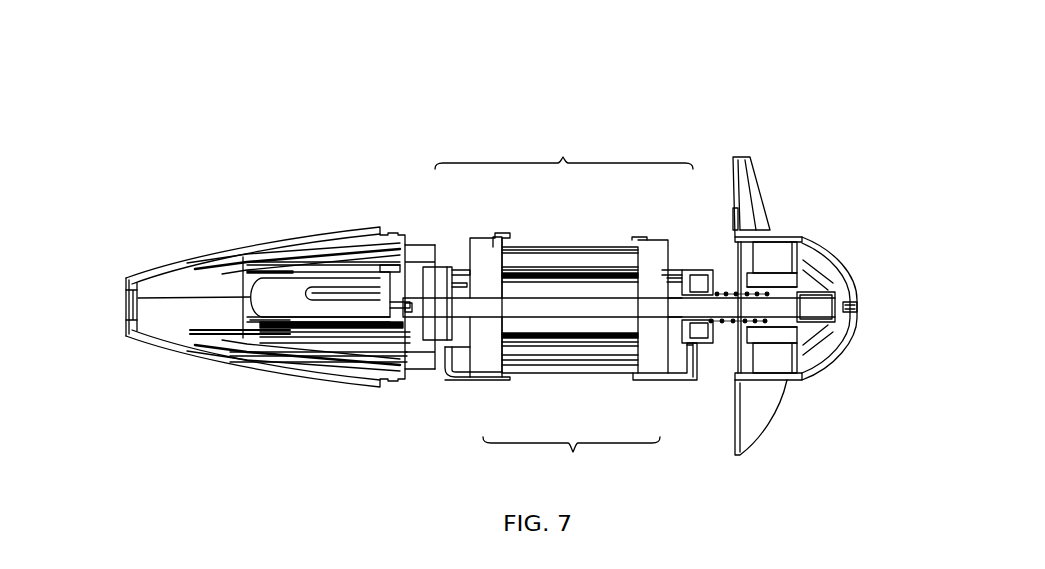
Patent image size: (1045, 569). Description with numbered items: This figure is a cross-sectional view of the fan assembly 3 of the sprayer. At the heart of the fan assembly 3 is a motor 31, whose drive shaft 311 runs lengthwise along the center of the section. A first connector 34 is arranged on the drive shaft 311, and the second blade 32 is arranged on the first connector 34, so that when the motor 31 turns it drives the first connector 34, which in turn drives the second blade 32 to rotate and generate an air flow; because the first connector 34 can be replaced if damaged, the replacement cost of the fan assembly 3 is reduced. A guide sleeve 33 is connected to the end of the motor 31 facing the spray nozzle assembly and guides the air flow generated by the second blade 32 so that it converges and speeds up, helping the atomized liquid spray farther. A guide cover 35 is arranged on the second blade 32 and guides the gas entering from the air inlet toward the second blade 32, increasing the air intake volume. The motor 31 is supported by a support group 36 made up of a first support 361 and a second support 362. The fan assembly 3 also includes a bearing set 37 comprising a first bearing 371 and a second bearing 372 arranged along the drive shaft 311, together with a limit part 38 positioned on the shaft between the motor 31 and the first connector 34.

The fan assembly 3 is at (552, 63).
The motor 31 is at (575, 262).
The drive shaft 311 is at (493, 313).
The second blade 32 is at (750, 210).
The guide sleeve 33 is at (242, 268).
The first connector 34 is at (767, 287).
The guide cover 35 is at (842, 287).
The support group 36 is at (571, 459).
The first support 361 is at (487, 352).
The second support 362 is at (660, 350).
The bearing set of the fan assembly 37 is at (564, 152).
The first bearing 371 is at (438, 284).
The second bearing 372 is at (700, 288).
The limit part 38 is at (730, 322).